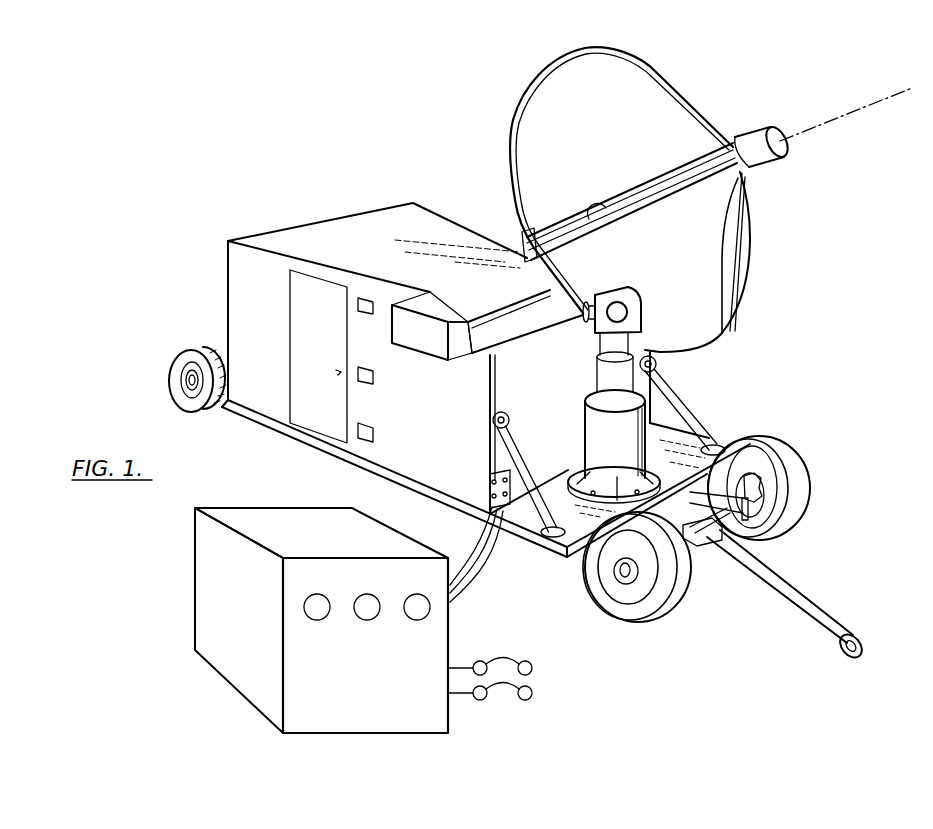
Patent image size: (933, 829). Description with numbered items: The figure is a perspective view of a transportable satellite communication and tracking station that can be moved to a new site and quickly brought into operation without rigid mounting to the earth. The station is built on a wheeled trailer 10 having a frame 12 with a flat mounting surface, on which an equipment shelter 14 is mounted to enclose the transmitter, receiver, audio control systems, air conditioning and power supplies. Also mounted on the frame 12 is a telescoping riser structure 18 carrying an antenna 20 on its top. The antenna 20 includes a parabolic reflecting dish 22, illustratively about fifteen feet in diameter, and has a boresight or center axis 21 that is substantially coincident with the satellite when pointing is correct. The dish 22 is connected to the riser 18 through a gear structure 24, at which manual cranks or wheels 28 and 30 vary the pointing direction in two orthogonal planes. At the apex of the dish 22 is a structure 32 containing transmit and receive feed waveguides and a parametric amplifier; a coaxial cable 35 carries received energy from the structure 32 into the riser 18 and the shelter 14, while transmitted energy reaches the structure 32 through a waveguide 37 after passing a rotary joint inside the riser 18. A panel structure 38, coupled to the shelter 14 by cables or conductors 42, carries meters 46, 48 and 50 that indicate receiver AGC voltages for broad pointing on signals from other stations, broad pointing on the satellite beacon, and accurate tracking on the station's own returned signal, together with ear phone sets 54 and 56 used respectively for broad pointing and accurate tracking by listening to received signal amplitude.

The trailer 10 is at (222, 281).
The frame 12 is at (678, 438).
The equipment shelter 14 is at (336, 223).
The telescoping riser structure 18 is at (610, 377).
The antenna 20 is at (762, 232).
The boresight or center axis 21 is at (848, 112).
The parabolic reflecting dish 22 is at (598, 118).
The gear structure 24 is at (605, 326).
The manual crank or wheel 28 is at (585, 302).
The manual crank or wheel 30 is at (624, 305).
The feed structure 32 is at (778, 140).
The coaxial cable 35 is at (723, 283).
The waveguide 37 is at (648, 195).
The panel structure 38 is at (300, 715).
The cables or conductors 42 is at (477, 571).
The meter 46 is at (316, 620).
The meter 48 is at (366, 620).
The meter 50 is at (416, 620).
The ear phone set 54 is at (532, 665).
The ear phone set 56 is at (532, 691).